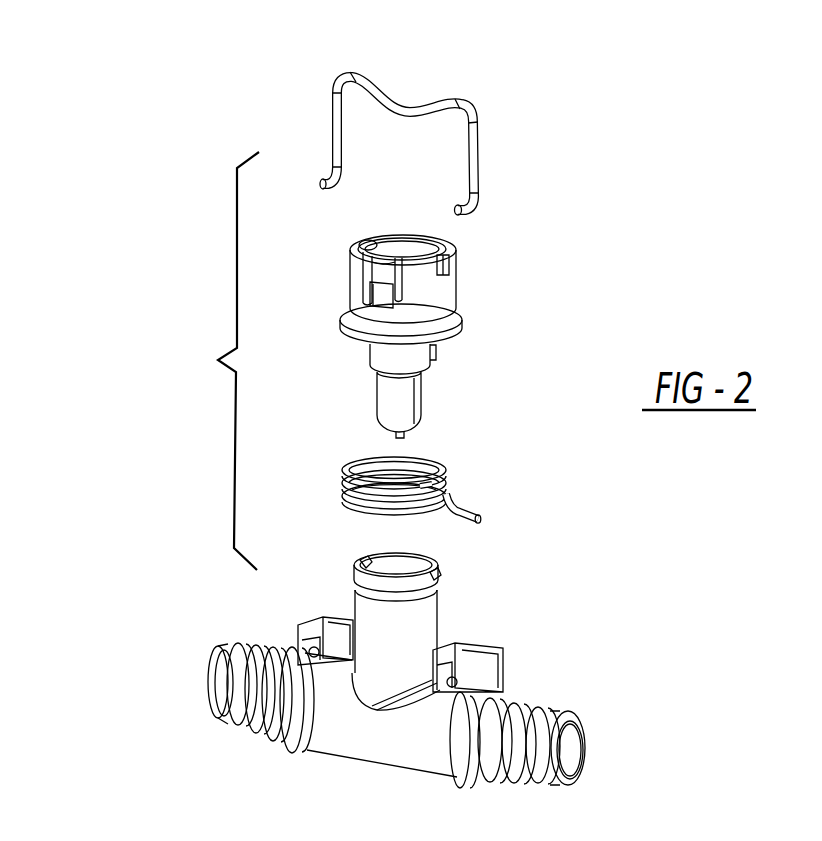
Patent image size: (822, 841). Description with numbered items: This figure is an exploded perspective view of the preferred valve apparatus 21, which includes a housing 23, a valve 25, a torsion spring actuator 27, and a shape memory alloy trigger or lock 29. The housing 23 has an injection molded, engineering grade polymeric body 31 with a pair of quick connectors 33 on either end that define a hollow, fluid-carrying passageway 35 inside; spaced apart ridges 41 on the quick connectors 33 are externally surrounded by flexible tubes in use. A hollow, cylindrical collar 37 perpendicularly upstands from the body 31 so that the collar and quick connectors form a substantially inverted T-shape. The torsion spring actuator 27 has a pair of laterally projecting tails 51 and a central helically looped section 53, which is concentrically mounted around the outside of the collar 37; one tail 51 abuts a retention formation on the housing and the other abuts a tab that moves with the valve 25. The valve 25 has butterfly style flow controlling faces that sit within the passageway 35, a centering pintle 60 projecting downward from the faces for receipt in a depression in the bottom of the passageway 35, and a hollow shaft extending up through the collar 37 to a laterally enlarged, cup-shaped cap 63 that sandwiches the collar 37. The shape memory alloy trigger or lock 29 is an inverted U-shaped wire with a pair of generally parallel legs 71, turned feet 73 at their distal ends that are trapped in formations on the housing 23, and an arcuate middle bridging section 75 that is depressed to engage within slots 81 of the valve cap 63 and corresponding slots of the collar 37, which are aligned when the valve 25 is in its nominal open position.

The valve apparatus 21 is at (366, 678).
The housing 23 is at (325, 715).
The valve 25 is at (422, 392).
The torsion spring actuator 27 is at (430, 463).
The shape memory alloy trigger or lock 29 is at (335, 120).
The body 31 is at (418, 720).
The quick connectors 33 is at (230, 722).
The passageway 35 is at (562, 750).
The collar 37 is at (428, 637).
The ridges 41 is at (555, 713).
The tails 51 is at (473, 512).
The helically looped section 53 is at (355, 466).
The centering pintle 60 is at (397, 434).
The cap 63 is at (420, 245).
The legs 71 is at (342, 143).
The feet 73 is at (477, 215).
The middle bridging section 75 is at (408, 104).
The slots 81 is at (447, 275).